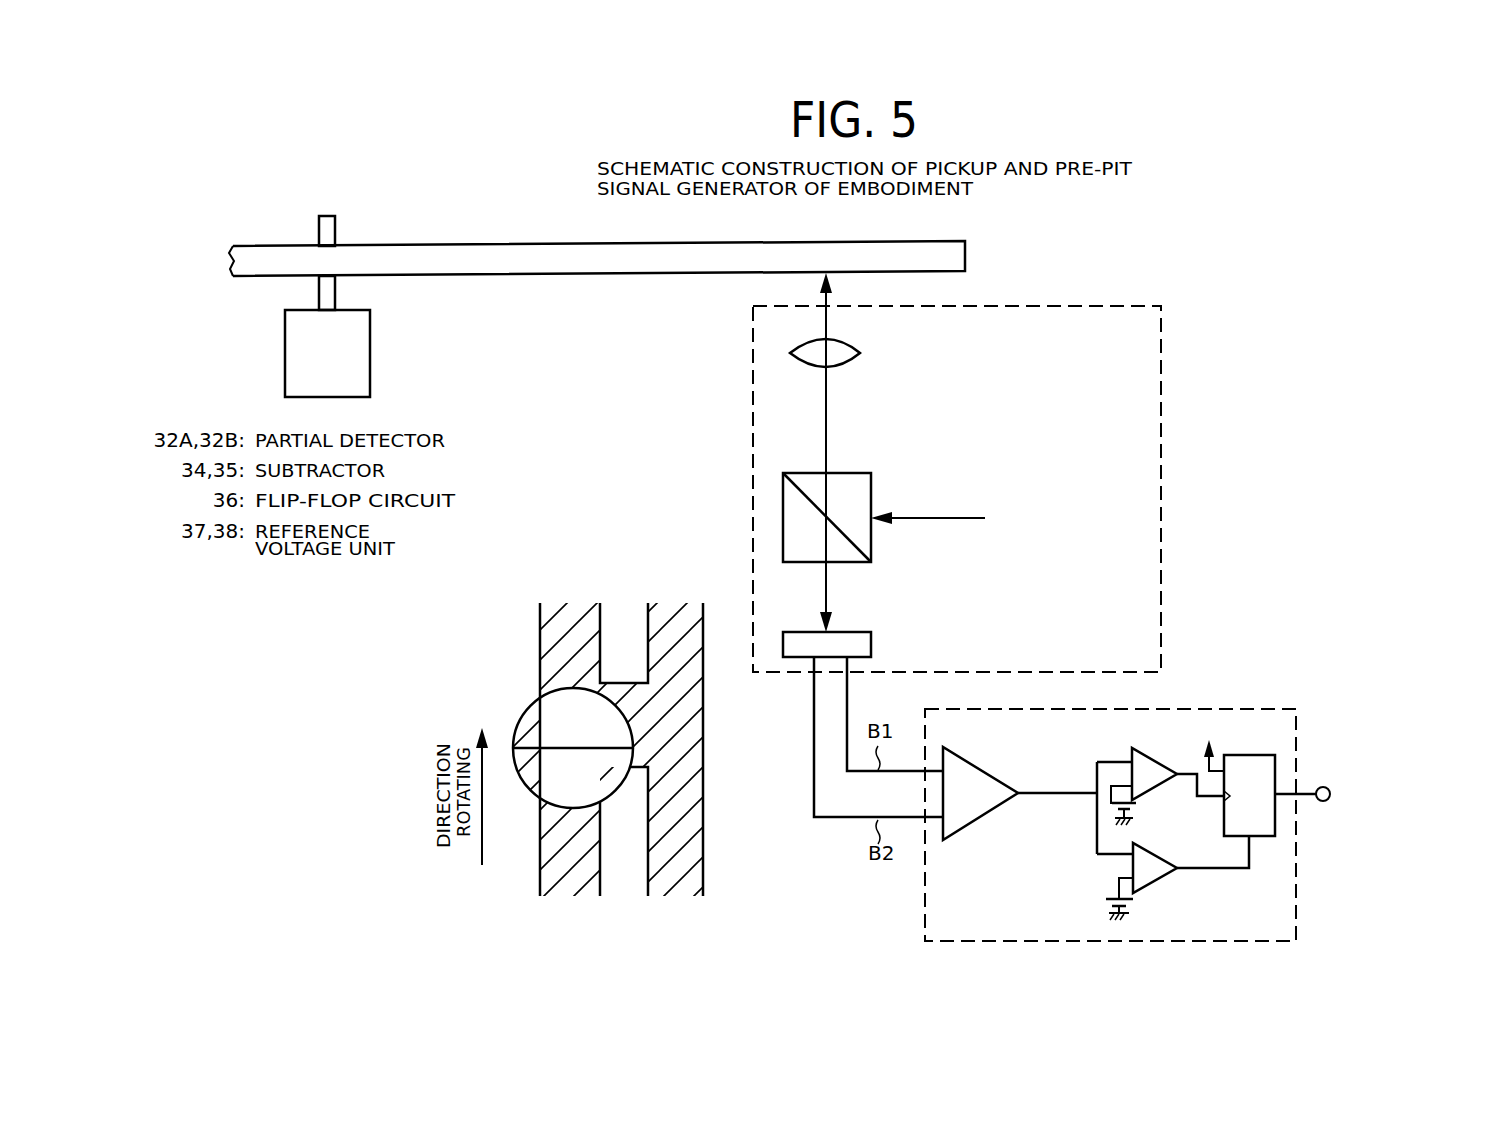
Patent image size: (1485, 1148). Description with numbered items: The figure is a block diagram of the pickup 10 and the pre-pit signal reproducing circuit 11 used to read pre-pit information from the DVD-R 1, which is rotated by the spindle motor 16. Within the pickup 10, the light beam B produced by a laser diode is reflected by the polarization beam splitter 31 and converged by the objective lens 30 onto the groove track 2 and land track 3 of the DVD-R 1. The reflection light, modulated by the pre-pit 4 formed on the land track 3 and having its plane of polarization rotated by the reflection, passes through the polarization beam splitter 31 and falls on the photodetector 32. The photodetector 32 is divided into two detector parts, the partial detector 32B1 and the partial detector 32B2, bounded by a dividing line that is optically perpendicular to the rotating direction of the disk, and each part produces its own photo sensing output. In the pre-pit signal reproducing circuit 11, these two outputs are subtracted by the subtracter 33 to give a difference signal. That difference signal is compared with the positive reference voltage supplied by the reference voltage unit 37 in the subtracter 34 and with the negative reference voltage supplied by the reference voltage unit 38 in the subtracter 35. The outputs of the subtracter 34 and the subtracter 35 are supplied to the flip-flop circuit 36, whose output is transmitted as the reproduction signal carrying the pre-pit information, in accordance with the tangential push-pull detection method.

The DVD-R 1 is at (967, 256).
The groove track 2 is at (550, 618).
The land track 3 is at (622, 632).
The pre-pit 4 is at (653, 708).
The pickup 10 is at (1163, 334).
The pre-pit signal reproducing circuit 11 is at (1203, 705).
The spindle motor 16 is at (371, 362).
The objective lens 30 is at (857, 352).
The polarization beam splitter 31 is at (863, 473).
The photodetector 32 is at (870, 632).
The partial detector 32B1 is at (528, 710).
The partial detector 32B2 is at (532, 795).
The subtracter 33 is at (968, 830).
The subtracter 34 is at (1161, 758).
The subtracter 35 is at (1175, 873).
The flip-flop circuit 36 is at (1257, 756).
The reference voltage unit 37 is at (1140, 822).
The reference voltage unit 38 is at (1128, 908).
The light beam B is at (1005, 515).